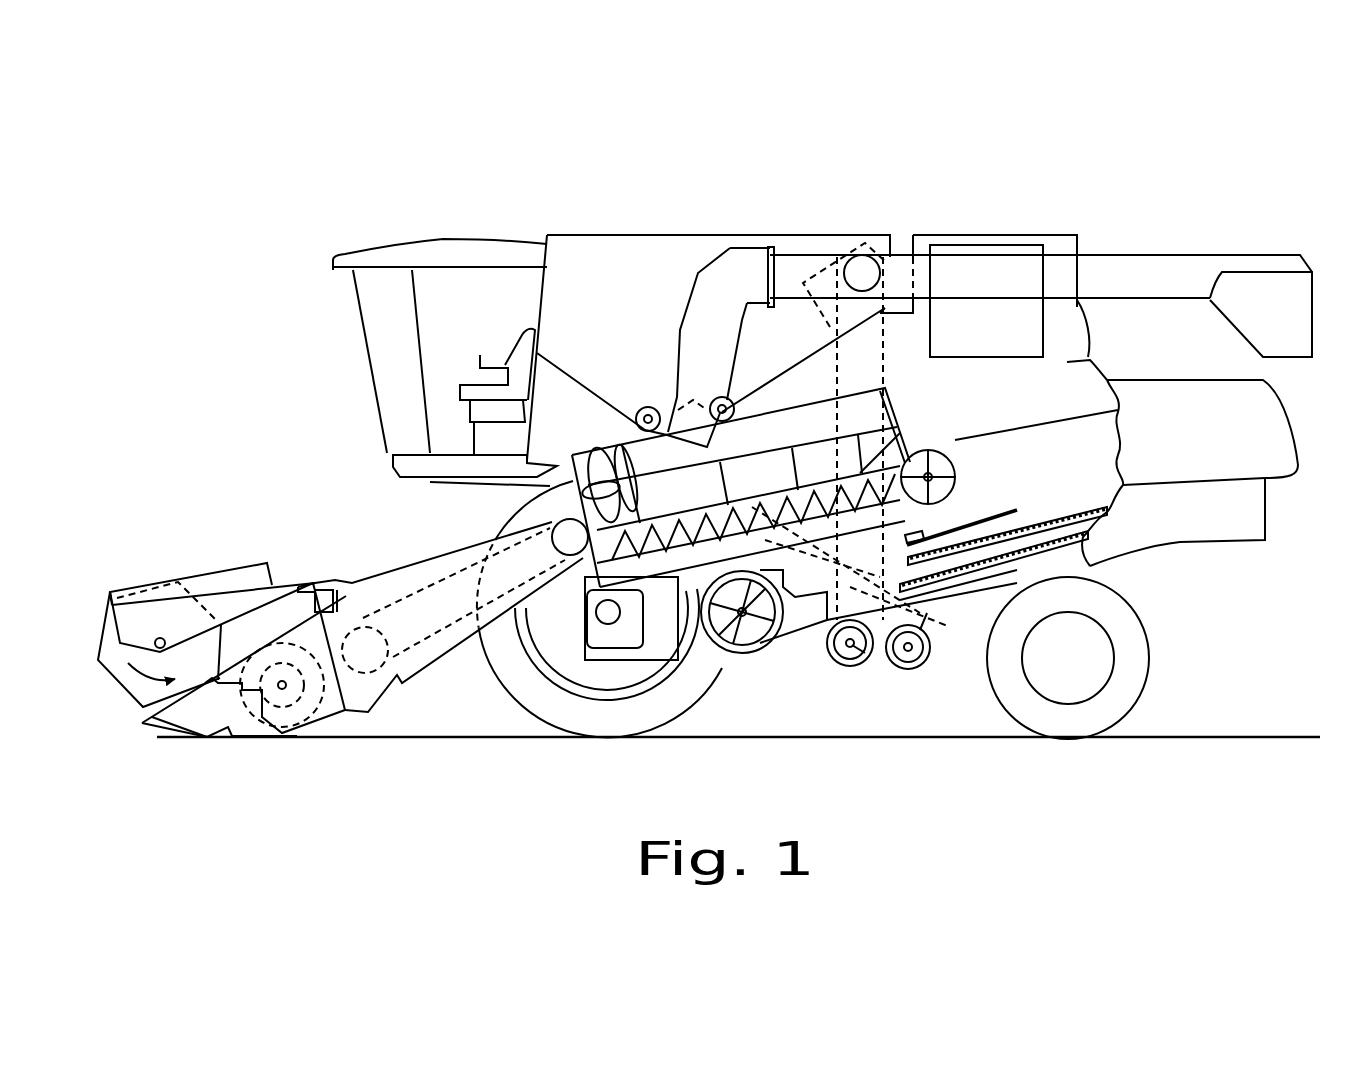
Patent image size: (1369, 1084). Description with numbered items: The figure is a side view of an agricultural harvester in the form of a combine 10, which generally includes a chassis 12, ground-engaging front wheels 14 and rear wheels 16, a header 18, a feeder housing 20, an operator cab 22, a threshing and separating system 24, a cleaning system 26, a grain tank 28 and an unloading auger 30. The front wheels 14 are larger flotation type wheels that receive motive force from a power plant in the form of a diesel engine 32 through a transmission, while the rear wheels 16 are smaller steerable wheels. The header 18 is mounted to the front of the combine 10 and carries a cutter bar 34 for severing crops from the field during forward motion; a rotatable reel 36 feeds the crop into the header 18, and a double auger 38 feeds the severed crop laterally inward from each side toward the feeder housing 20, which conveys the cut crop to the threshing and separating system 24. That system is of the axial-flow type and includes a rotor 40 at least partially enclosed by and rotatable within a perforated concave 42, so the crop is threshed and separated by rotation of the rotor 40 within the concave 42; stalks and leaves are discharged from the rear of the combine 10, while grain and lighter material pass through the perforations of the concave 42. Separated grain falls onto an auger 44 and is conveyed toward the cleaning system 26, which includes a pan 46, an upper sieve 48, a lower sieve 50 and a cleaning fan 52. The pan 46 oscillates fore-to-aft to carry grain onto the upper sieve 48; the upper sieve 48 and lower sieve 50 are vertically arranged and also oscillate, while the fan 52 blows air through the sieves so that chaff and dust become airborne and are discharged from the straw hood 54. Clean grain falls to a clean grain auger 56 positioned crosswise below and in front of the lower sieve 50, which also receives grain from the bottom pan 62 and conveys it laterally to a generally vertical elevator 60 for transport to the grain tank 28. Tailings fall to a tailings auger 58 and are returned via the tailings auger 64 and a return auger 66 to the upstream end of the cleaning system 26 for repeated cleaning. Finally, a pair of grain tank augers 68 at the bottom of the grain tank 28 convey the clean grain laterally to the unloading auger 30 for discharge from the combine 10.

The combine 10 is at (430, 222).
The chassis 12 is at (1090, 568).
The front wheels 14 is at (513, 692).
The rear wheels 16 is at (1150, 676).
The header 18 is at (195, 558).
The feeder housing 20 is at (405, 568).
The operator cab 22 is at (365, 340).
The threshing and separating system 24 is at (512, 503).
The cleaning system 26 is at (972, 500).
The grain tank 28 is at (600, 240).
The unloading auger 30 is at (1167, 262).
The diesel engine 32 is at (975, 245).
The cutter bar 34 is at (207, 740).
The reel 36 is at (103, 633).
The double auger 38 is at (285, 707).
The rotor 40 is at (600, 460).
The concave 42 is at (782, 437).
The auger 44 is at (595, 618).
The pan 46 is at (1003, 510).
The upper sieve 48 is at (1053, 520).
The lower sieve 50 is at (960, 573).
The cleaning fan 52 is at (750, 637).
The straw hood 54 is at (1280, 420).
The clean grain auger 56 is at (855, 655).
The tailings auger 58 is at (1003, 590).
The elevator 60 is at (882, 363).
The bottom pan 62 is at (987, 595).
The tailings auger 64 is at (908, 662).
The return auger 66 is at (813, 563).
The grain tank augers 68 is at (645, 407).